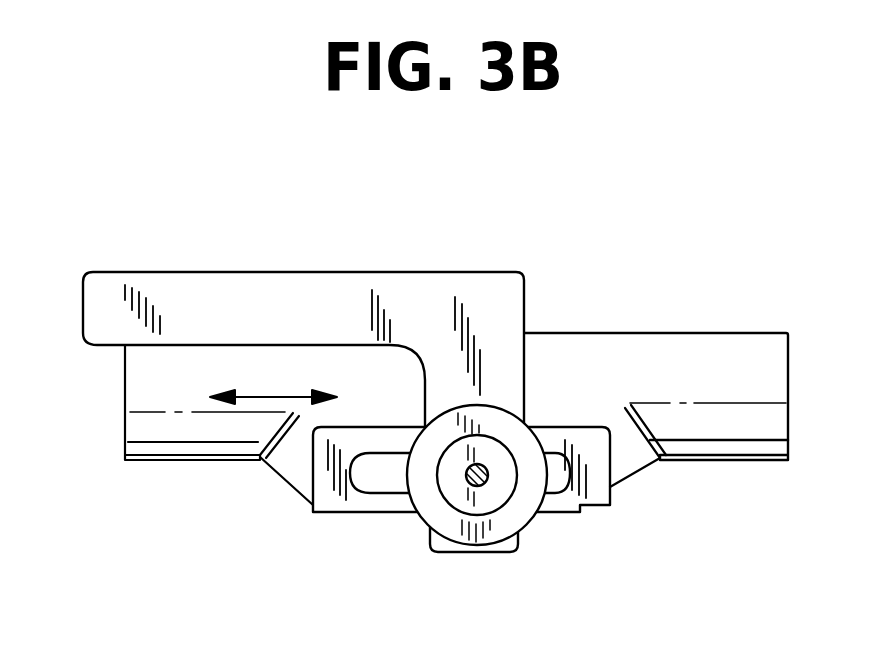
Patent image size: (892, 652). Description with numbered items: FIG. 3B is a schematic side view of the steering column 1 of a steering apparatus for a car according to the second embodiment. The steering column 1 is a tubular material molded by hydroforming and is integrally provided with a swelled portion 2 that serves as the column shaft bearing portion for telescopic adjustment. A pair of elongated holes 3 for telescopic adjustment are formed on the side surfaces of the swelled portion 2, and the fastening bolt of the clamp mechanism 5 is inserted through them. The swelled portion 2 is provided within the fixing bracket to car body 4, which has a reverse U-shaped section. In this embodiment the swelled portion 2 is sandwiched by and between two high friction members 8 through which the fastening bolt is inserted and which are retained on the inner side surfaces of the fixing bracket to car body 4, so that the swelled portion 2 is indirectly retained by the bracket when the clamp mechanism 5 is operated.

The steering column 1 is at (637, 333).
The swelled portion 2 is at (647, 467).
The elongated holes 3 is at (377, 473).
The fixing bracket to car body 4 is at (375, 272).
The clamp mechanism 5 is at (500, 487).
The high friction members 8 is at (313, 465).